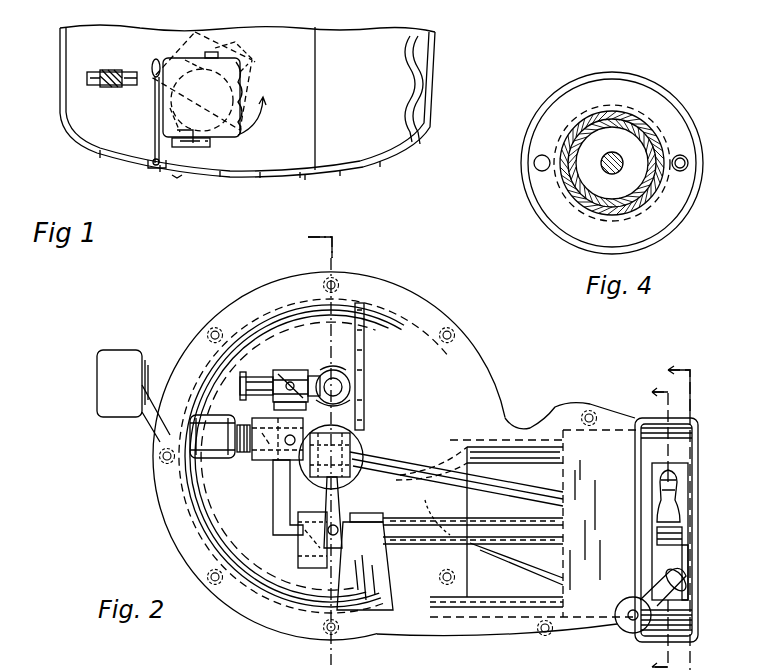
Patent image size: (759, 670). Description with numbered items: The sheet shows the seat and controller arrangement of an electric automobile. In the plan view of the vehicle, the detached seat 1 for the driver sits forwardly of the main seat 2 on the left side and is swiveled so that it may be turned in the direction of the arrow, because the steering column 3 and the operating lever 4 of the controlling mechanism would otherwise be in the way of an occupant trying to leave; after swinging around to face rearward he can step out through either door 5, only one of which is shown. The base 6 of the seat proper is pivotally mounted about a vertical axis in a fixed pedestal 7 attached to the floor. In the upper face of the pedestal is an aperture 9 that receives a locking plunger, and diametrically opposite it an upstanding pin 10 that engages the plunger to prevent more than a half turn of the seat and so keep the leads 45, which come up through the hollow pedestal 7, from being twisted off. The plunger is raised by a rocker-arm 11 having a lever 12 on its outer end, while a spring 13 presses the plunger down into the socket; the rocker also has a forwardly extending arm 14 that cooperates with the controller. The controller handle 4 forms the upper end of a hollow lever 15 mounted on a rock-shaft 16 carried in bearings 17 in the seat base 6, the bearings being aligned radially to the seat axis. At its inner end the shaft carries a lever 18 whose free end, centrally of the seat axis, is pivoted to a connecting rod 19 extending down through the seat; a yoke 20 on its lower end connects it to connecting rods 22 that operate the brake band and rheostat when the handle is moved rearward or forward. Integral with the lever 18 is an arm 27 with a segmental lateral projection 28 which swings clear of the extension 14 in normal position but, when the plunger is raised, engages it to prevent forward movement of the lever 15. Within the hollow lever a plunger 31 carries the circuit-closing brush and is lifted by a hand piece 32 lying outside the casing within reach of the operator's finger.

In FIG. 1, the detached seat 1 is at (176, 84).
In FIG. 1, the main seat 2 is at (247, 101).
In FIG. 4, the main seat 2 is at (690, 120).
In FIG. 1, the steering column 3 is at (158, 160).
In FIG. 2, the steering column 3 is at (319, 453).
In FIG. 1, the operating lever 4 is at (188, 148).
In FIG. 2, the operating lever 4 is at (637, 618).
In FIG. 1, the door 5 is at (240, 177).
In FIG. 2, the base 6 is at (165, 492).
In FIG. 2, the pedestal 7 is at (677, 509).
In FIG. 4, the aperture 9 is at (690, 163).
In FIG. 2, the aperture 9 is at (650, 525).
In FIG. 4, the pin 10 is at (540, 168).
In FIG. 2, the rocker-arm 11 is at (282, 372).
In FIG. 2, the lever 12 is at (133, 396).
In FIG. 2, the spring 13 is at (245, 405).
In FIG. 2, the forwardly extending arm 14 is at (310, 478).
In FIG. 2, the hollow lever 15 is at (686, 560).
In FIG. 2, the rock-shaft 16 is at (468, 542).
In FIG. 2, the bearings 17 is at (385, 530).
In FIG. 2, the lever 18 is at (352, 368).
In FIG. 4, the connecting rod 19 is at (616, 160).
In FIG. 2, the connecting rod 19 is at (425, 443).
In FIG. 2, the yoke 20 is at (368, 400).
In FIG. 2, the connecting rods 22 is at (386, 636).
In FIG. 2, the arm 27 is at (312, 553).
In FIG. 2, the lateral projection 28 is at (307, 553).
In FIG. 2, the plunger 31 is at (683, 537).
In FIG. 2, the hand piece 32 is at (680, 497).
In FIG. 2, the leads 45 is at (446, 490).